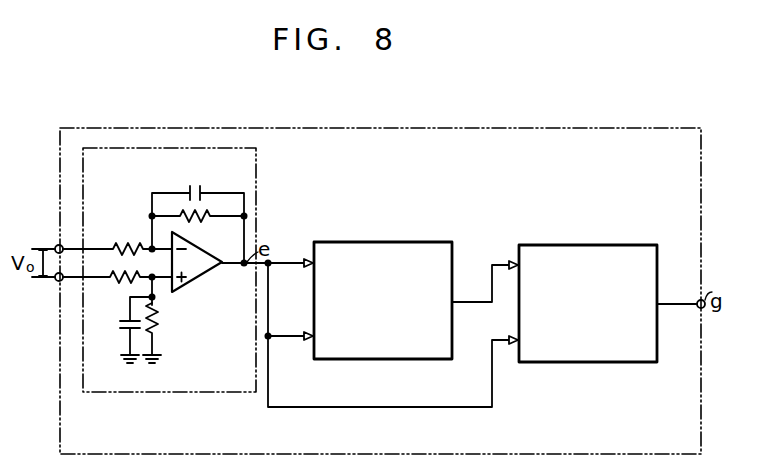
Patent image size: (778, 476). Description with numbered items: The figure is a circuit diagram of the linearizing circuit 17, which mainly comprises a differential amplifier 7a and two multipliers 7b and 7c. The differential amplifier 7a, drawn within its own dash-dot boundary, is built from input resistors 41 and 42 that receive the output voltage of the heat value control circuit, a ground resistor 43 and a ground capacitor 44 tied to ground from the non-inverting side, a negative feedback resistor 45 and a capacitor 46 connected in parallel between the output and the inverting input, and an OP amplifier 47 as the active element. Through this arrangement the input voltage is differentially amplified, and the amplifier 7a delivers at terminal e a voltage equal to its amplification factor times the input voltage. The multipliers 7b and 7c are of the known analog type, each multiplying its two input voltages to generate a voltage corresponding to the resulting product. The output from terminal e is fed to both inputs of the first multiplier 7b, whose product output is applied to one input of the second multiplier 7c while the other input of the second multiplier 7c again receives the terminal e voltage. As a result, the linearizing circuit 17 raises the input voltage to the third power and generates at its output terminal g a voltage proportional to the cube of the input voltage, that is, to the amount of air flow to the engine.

The linearizing circuit 17 is at (432, 128).
The differential amplifier 7a is at (256, 212).
The multiplier 7b is at (411, 242).
The multiplier 7c is at (616, 245).
The input resistor 41 is at (128, 246).
The input resistor 42 is at (126, 281).
The ground resistor 43 is at (158, 322).
The ground capacitor 44 is at (124, 330).
The negative feedback resistor 45 is at (203, 218).
The capacitor 46 is at (196, 186).
The OP amplifier 47 is at (196, 276).